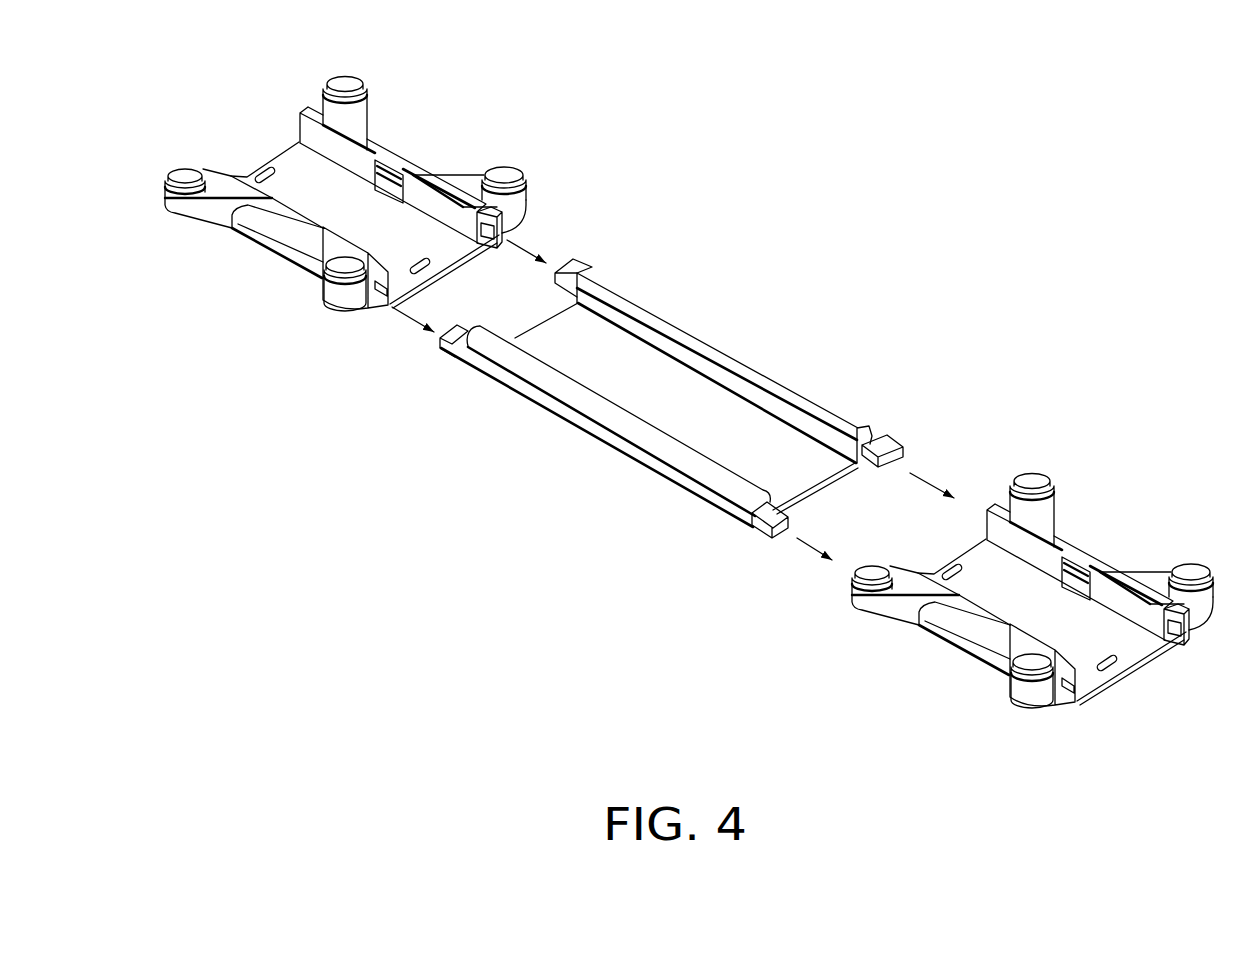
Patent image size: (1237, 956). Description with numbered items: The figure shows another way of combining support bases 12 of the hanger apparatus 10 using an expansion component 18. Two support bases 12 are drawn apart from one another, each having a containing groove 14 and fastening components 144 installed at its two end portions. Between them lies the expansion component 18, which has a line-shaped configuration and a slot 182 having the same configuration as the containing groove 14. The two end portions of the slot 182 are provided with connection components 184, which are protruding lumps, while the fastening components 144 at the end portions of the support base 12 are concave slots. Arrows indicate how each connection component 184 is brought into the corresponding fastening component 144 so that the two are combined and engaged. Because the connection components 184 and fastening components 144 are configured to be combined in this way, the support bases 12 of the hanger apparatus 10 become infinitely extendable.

The hanger apparatus 10 is at (487, 109).
The support base 12 is at (390, 157).
The containing groove 14 is at (293, 170).
The fastening component 144 is at (502, 233).
The expansion component 18 is at (570, 395).
The slot 182 is at (727, 427).
The connection component 184 is at (573, 267).